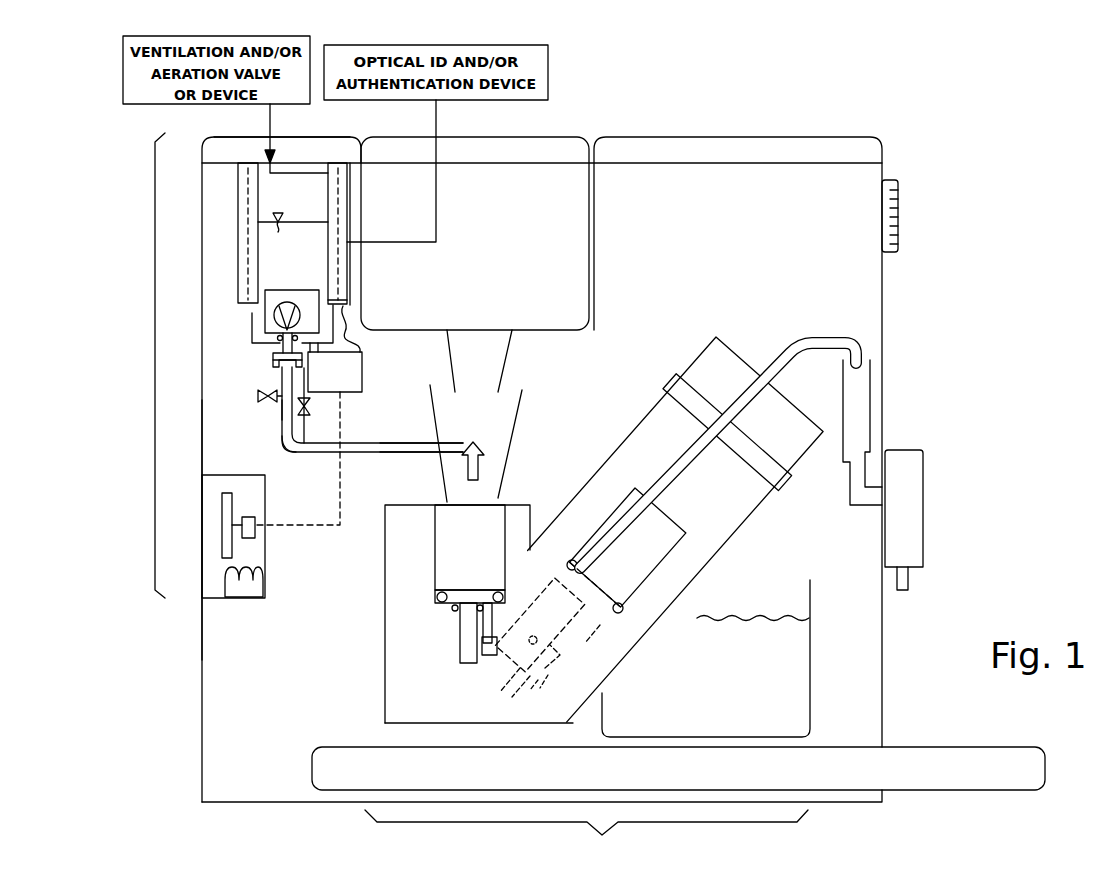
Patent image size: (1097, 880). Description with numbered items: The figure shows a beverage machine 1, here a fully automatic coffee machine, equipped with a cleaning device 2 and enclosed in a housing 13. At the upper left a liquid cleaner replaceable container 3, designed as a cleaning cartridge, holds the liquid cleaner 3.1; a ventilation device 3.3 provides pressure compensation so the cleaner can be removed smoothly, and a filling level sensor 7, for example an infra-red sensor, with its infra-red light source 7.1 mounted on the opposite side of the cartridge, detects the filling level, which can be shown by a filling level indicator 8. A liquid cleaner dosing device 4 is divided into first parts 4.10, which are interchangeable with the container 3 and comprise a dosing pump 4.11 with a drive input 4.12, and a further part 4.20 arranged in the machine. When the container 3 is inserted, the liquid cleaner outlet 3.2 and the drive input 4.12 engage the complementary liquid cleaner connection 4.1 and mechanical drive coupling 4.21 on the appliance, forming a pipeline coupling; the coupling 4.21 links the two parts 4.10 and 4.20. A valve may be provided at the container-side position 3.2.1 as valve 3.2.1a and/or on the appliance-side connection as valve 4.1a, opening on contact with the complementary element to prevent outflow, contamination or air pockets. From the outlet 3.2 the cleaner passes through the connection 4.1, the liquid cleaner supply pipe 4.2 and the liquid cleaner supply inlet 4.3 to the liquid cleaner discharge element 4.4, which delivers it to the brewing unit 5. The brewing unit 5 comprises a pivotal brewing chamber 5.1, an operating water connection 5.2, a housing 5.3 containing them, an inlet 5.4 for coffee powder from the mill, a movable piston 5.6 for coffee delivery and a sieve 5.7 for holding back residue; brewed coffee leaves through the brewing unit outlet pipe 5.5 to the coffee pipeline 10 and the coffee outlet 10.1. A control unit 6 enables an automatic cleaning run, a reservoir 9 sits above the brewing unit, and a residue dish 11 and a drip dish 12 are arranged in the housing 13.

The beverage machine 1 is at (945, 190).
The cleaning device 2 is at (155, 352).
The liquid cleaner replaceable container 3 is at (303, 133).
The liquid cleaner 3.1 is at (316, 238).
The liquid cleaner outlet 3.2 is at (253, 344).
The valve position 3.2.1 is at (279, 356).
The valve 3.2.1a is at (275, 362).
The ventilation device 3.3 is at (268, 156).
The liquid cleaner dosing device 4 is at (360, 327).
The liquid cleaner connection 4.1 is at (258, 391).
The valve 4.1a is at (285, 452).
The liquid cleaner supply pipe 4.2 is at (290, 412).
The liquid cleaner supply inlet 4.3 is at (395, 447).
The liquid cleaner discharge element 4.4 is at (484, 456).
The first parts of the dosing device 4.10 is at (257, 317).
The dosing pump 4.11 is at (288, 308).
The drive input 4.12 is at (338, 304).
The further part of the dosing device 4.20 is at (314, 412).
The mechanical drive coupling 4.21 is at (362, 371).
The brewing unit 5 is at (586, 836).
The brewing chamber 5.1 is at (433, 622).
The operating water connection 5.2 is at (528, 700).
The housing 5.3 is at (620, 447).
The inlet 5.4 is at (505, 400).
The brewing unit outlet pipe 5.5 is at (830, 336).
The movable piston 5.6 is at (622, 607).
The gripper arm 5.7 is at (580, 617).
The control unit 6 is at (278, 562).
The filling level sensor 7 is at (243, 242).
The infra-red light source 7.1 is at (343, 271).
The filling level indicator 8 is at (899, 213).
The reservoir 9 is at (560, 236).
The coffee pipeline 10 is at (858, 403).
The coffee outlet 10.1 is at (910, 503).
The residue dish 11 is at (765, 680).
The drip dish 12 is at (912, 762).
The housing 13 is at (883, 322).